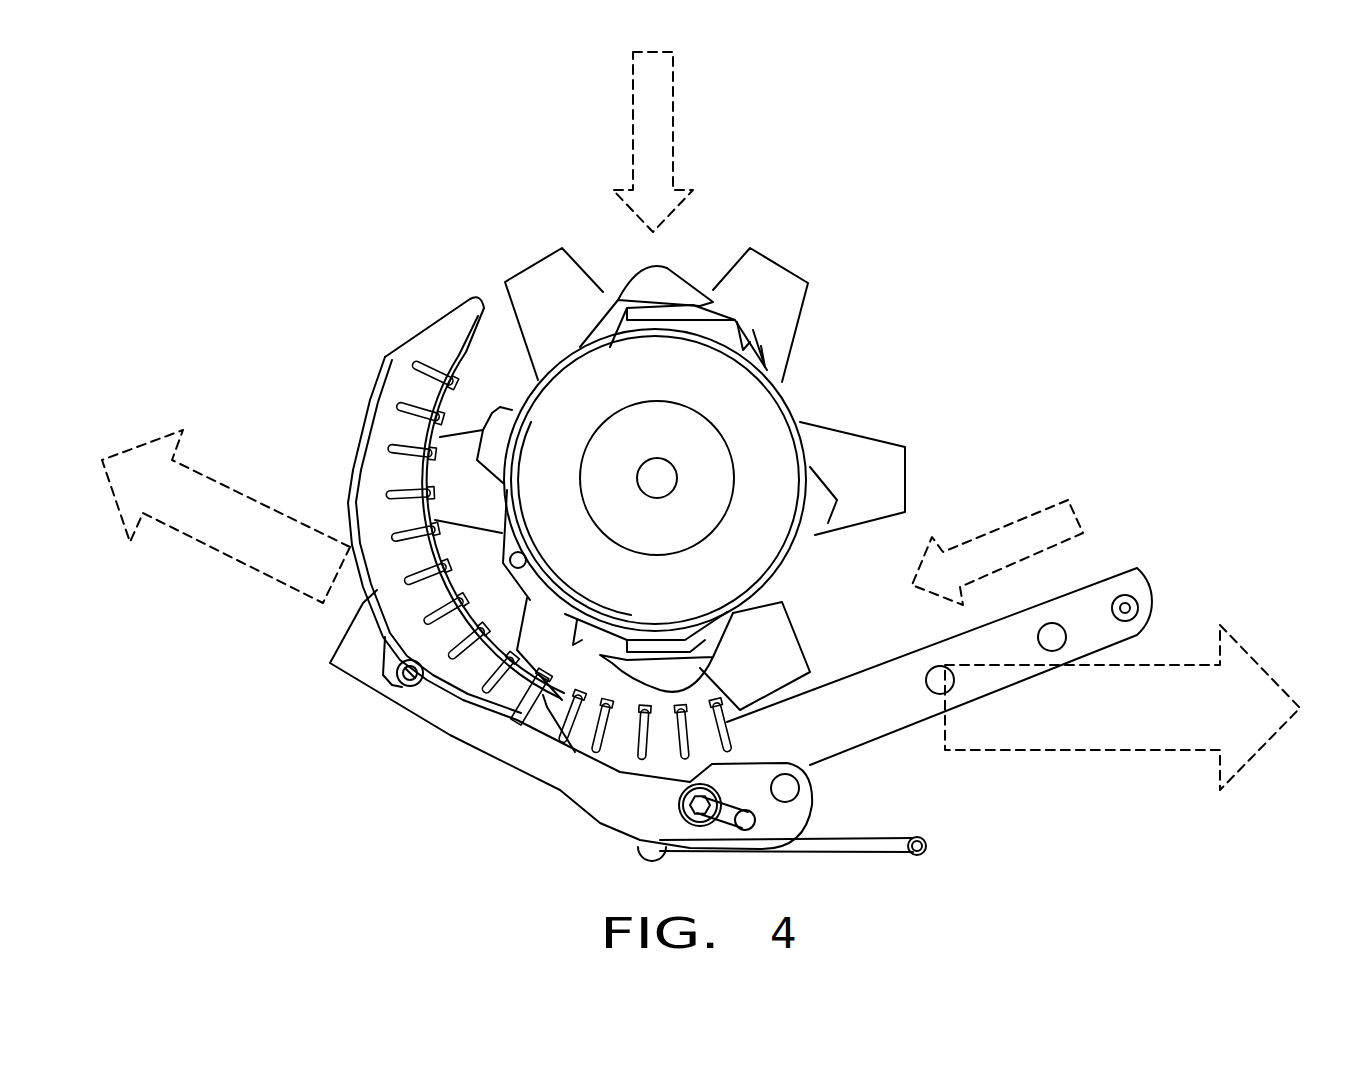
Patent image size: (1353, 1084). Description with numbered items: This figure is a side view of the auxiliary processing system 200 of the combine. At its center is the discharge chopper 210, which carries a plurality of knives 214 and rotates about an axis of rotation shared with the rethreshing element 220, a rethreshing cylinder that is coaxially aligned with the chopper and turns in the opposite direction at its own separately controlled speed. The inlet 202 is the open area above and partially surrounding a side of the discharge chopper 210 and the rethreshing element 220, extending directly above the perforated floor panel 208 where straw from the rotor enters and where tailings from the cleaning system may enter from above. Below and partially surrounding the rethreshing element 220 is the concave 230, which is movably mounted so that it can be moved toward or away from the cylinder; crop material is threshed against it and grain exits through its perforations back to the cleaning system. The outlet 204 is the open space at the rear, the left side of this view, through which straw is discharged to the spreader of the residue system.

The auxiliary processing system 200 is at (478, 283).
The inlet 202 is at (968, 360).
The outlet 204 is at (327, 468).
The perforated floor panel 208 is at (1137, 568).
The discharge chopper 210 is at (818, 307).
The knives 214 is at (772, 278).
The rethreshing element 220 is at (788, 400).
The concave 230 is at (410, 612).